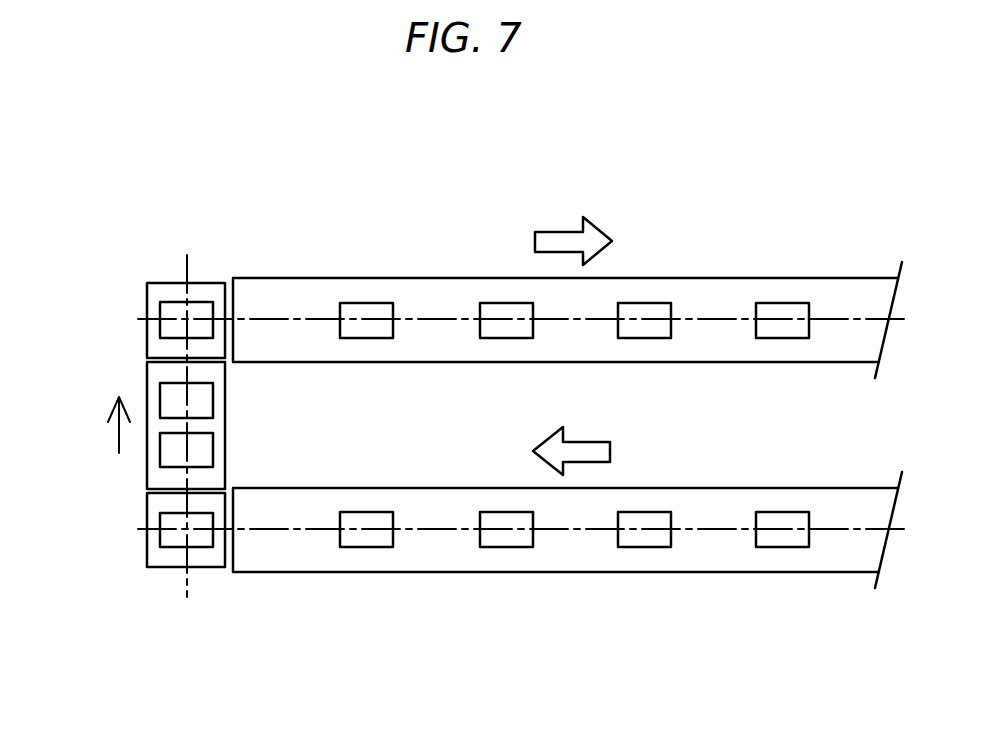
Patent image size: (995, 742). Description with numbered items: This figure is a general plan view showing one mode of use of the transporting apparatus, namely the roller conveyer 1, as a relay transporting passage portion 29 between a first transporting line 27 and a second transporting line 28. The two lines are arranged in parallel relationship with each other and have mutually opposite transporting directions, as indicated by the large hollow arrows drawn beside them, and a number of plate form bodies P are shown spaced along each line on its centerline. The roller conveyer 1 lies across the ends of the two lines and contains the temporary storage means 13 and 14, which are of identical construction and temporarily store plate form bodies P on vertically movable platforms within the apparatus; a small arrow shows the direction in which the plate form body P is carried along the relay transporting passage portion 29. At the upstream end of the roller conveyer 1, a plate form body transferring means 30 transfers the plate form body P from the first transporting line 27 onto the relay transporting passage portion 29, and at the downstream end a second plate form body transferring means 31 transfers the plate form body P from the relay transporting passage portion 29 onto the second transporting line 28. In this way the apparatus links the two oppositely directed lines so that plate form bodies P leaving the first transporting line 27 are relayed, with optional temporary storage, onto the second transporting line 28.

The roller conveyer 1 is at (215, 425).
The temporary storage means 13 is at (232, 452).
The temporary storage means 14 is at (140, 385).
The first transporting line 27 is at (708, 555).
The second transporting line 28 is at (713, 298).
The relay transporting passage portion 29 is at (133, 487).
The plate form body transferring means 30 is at (205, 557).
The plate form body transferring means 31 is at (161, 288).
The plate form body P is at (500, 312).